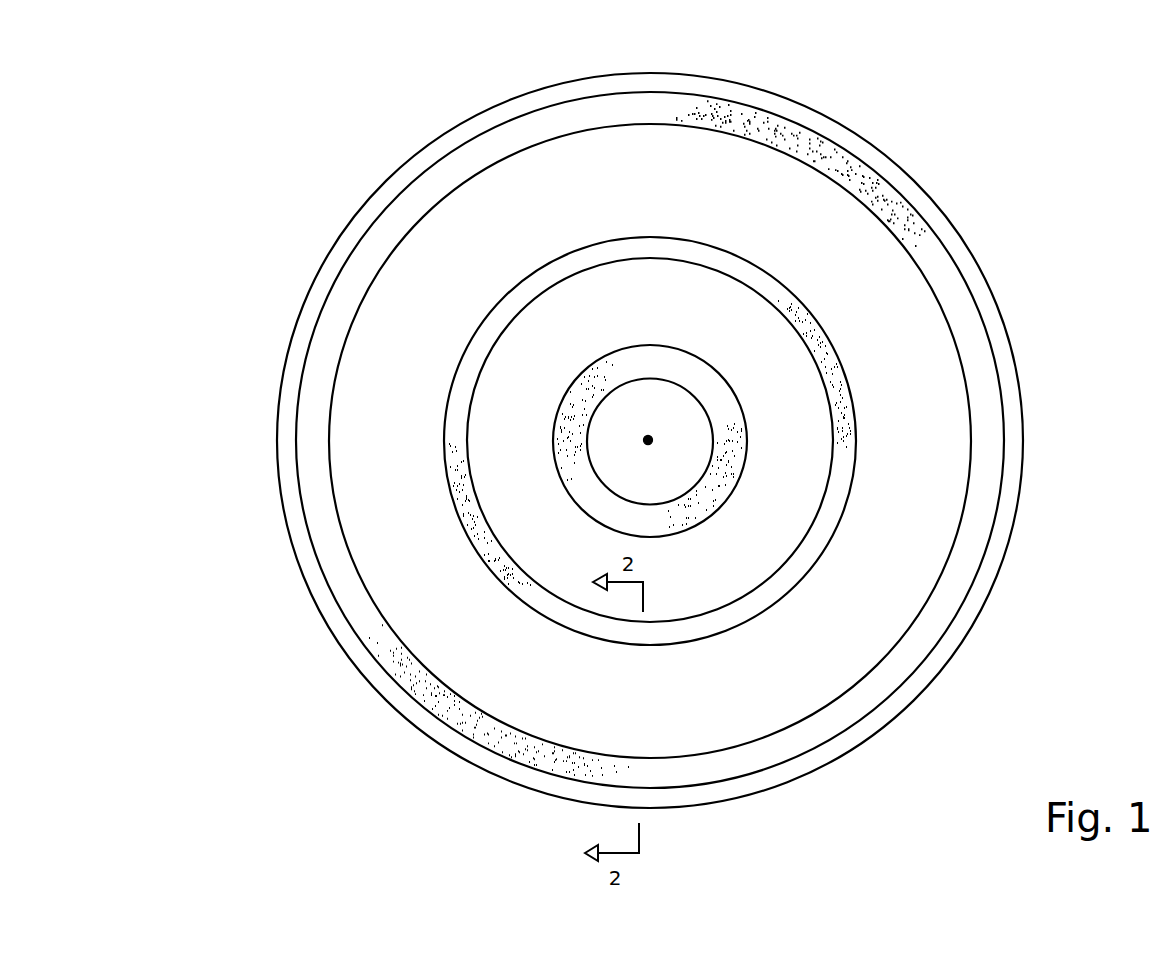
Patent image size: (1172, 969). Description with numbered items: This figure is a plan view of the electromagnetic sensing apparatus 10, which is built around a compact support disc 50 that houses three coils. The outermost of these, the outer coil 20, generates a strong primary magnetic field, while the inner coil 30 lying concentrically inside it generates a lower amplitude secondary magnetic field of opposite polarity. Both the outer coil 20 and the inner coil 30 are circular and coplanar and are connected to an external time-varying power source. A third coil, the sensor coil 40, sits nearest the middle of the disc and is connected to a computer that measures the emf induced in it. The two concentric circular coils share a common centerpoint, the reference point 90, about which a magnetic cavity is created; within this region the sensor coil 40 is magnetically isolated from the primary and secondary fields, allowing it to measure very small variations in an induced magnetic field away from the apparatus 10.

The electromagnetic sensing apparatus 10 is at (347, 90).
The outer coil 20 is at (792, 140).
The inner coil 30 is at (838, 380).
The sensor coil 40 is at (720, 480).
The support disc 50 is at (853, 267).
The reference point 90 is at (648, 440).